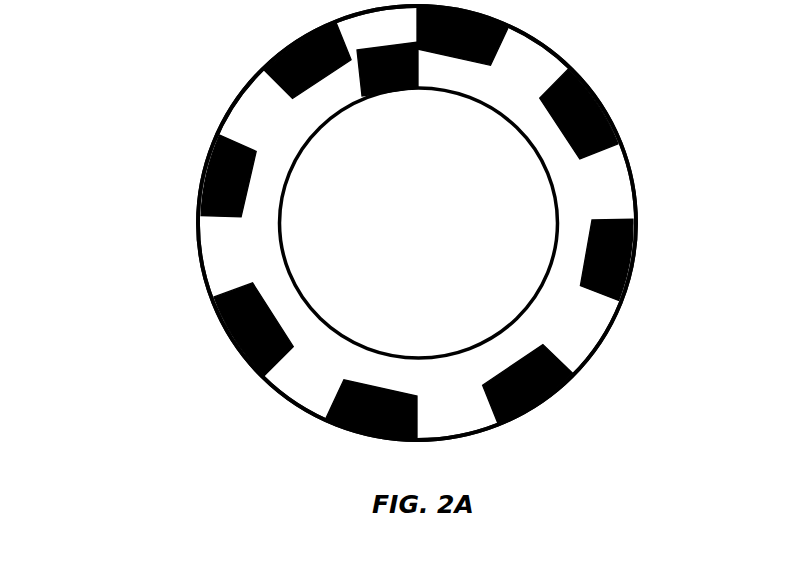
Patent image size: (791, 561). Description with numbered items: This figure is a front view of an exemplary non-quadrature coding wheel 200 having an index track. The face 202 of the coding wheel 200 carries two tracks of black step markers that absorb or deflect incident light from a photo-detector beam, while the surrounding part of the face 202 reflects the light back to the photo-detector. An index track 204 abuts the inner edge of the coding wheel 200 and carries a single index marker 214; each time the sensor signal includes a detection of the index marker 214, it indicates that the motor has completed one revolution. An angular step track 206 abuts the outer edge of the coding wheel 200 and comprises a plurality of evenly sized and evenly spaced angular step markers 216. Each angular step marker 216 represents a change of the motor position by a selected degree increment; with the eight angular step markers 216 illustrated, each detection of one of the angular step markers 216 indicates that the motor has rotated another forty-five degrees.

The coding wheel 200 is at (152, 48).
The face 202 is at (600, 333).
The index track 204 is at (554, 194).
The angular step track 206 is at (527, 47).
The index marker 214 is at (394, 94).
The angular step markers 216 is at (616, 117).